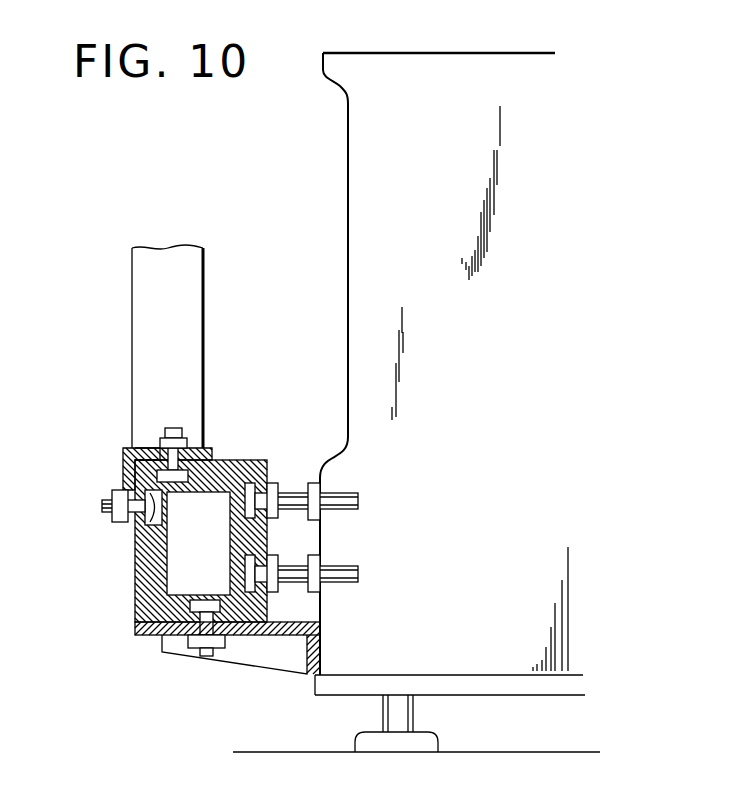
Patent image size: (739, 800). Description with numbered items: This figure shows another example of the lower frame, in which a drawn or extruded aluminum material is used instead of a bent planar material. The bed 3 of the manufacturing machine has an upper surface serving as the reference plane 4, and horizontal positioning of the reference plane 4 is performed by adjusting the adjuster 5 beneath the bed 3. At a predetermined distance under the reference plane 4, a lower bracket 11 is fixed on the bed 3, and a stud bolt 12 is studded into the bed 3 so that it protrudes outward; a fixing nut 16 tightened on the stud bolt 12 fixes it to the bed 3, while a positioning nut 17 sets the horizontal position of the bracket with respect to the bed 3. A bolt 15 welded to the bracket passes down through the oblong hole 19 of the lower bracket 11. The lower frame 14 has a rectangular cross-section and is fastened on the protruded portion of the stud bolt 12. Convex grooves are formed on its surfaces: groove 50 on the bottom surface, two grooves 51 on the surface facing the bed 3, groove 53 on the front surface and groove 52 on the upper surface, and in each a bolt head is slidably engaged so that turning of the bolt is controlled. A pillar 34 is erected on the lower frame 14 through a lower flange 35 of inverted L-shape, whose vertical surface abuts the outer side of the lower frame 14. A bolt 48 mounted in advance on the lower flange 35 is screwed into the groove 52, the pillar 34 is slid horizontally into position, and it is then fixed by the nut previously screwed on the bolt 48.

The bed 3 is at (380, 155).
The reference plane 4 is at (348, 53).
The adjuster 5 is at (358, 732).
The lower bracket 11 is at (252, 668).
The stud bolt 12 is at (345, 493).
The lower frame 14 is at (135, 567).
The bolt 15 is at (205, 657).
The fixing nut 16 is at (310, 483).
The positioning nut 17 is at (277, 483).
The oblong hole 19 is at (160, 650).
The pillar 34 is at (132, 285).
The lower flange 35 is at (123, 464).
The bolt 48 is at (172, 427).
The convex groove 50 is at (207, 600).
The convex groove 51 is at (248, 460).
The convex groove 52 is at (145, 447).
The convex groove 53 is at (148, 528).